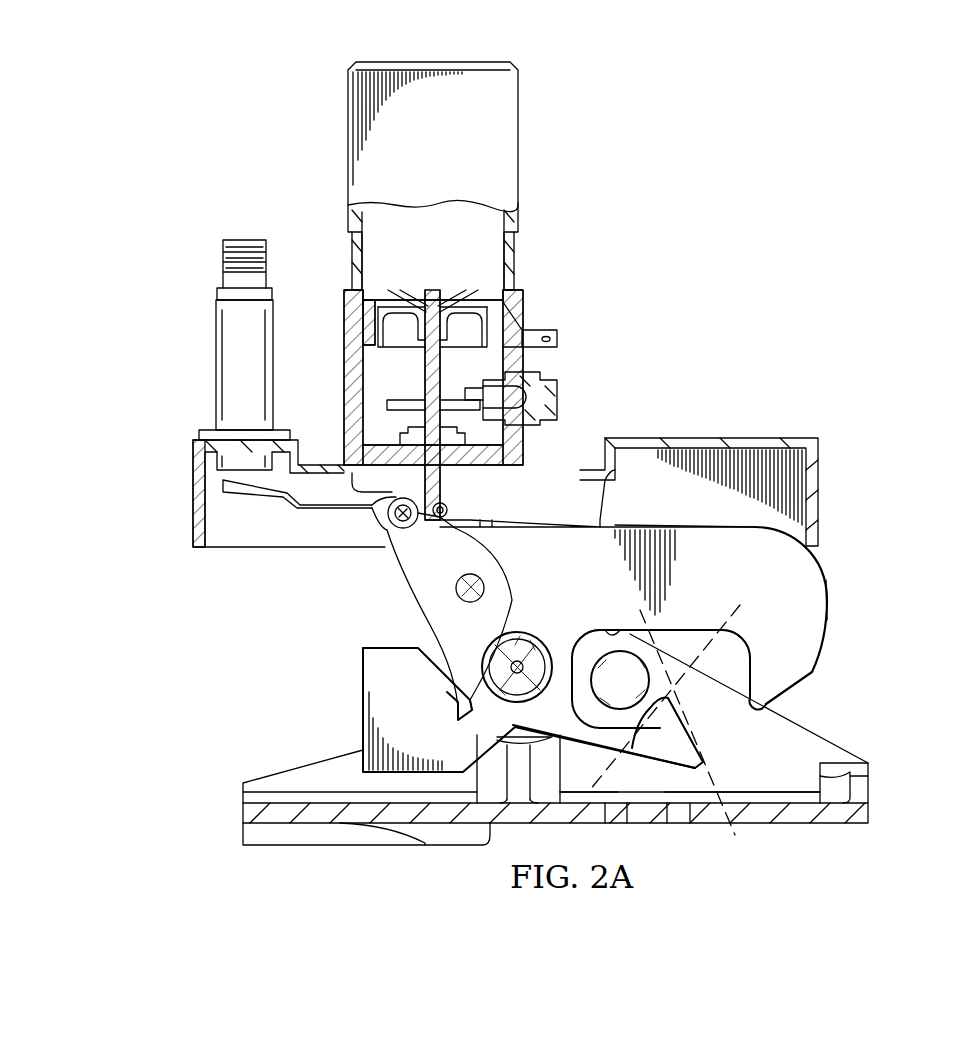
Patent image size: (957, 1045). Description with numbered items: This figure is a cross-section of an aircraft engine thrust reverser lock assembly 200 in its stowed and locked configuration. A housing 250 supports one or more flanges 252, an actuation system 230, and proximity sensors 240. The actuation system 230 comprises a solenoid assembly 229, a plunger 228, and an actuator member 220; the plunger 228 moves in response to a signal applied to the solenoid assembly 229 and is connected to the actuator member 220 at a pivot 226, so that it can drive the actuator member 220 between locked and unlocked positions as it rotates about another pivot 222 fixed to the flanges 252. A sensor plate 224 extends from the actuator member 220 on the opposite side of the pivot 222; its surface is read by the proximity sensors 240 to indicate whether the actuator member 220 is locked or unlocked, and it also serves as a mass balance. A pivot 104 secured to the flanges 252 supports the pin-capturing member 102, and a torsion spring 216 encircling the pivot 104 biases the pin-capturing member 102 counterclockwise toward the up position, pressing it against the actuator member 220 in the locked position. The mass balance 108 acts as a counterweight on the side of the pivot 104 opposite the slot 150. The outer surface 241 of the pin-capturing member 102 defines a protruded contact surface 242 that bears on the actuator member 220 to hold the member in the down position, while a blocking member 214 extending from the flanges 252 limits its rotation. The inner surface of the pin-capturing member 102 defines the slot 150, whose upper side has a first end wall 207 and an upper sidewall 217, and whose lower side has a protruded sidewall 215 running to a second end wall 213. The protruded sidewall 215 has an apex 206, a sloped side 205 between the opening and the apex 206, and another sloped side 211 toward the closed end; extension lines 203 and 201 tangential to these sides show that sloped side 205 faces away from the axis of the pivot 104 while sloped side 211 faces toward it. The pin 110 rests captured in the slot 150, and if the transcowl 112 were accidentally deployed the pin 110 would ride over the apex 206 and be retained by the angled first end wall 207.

The thrust reverser lock assembly 200 is at (690, 322).
The solenoid assembly 229 is at (450, 143).
The actuation system 230 is at (348, 160).
The plunger 228 is at (431, 296).
The proximity sensors 240 is at (216, 362).
The housing 250 is at (698, 438).
The sensor plate 224 is at (255, 495).
The pivot 222 is at (395, 520).
The pivot 226 is at (449, 507).
The contact surface 242 is at (505, 517).
The actuator member 220 is at (450, 530).
The flanges 252 is at (428, 590).
The blocking member 214 is at (482, 585).
The torsion spring 216 is at (522, 636).
The second end wall 213 is at (577, 660).
The pin 110 is at (640, 691).
The pin-capturing member 102 is at (822, 584).
The outer surface 241 is at (832, 614).
The first end wall 207 is at (750, 652).
The upper sidewall 217 is at (602, 626).
The extension line 203 is at (640, 605).
The extension line 201 is at (740, 602).
The protruded sidewall 215 is at (676, 682).
The apex 206 is at (690, 702).
The sloped side 205 is at (705, 745).
The slot 150 is at (763, 727).
The pivot 104 is at (462, 668).
The mass balance 108 is at (362, 673).
The transcowl 112 is at (868, 797).
The sloped side 211 is at (690, 792).